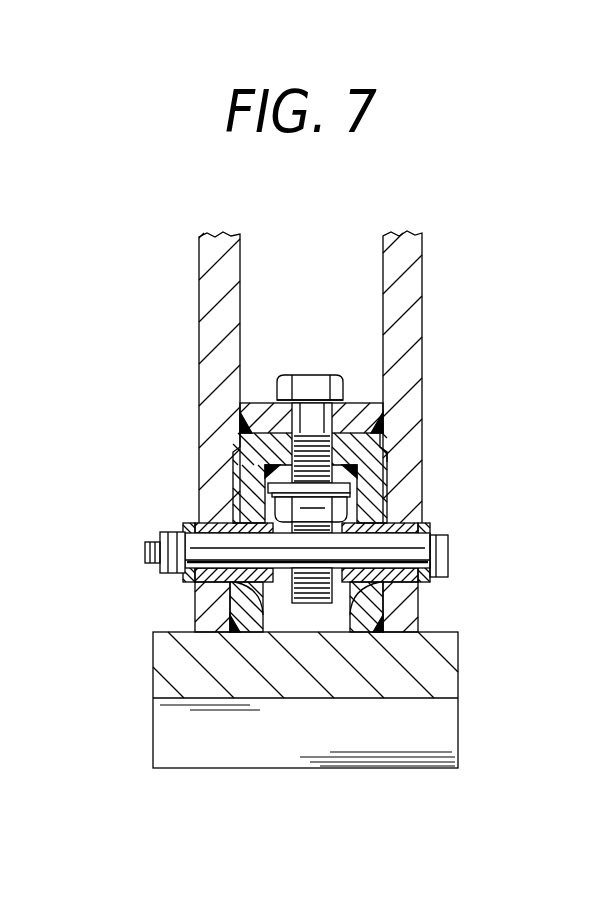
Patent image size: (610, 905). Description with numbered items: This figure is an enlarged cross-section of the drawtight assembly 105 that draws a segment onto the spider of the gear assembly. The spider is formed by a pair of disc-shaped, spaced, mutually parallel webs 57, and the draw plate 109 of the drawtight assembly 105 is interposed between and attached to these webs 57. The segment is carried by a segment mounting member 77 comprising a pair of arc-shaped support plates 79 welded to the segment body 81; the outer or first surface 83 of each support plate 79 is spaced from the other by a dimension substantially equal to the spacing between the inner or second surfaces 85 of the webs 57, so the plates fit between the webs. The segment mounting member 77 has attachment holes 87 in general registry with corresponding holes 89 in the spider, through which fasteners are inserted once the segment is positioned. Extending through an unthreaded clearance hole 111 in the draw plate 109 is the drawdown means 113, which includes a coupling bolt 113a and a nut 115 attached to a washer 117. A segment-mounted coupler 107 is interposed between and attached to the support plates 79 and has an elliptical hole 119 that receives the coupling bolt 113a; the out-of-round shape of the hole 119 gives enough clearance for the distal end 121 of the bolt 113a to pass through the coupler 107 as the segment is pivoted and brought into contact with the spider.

The web 57 is at (198, 278).
The segment mounting member 77 is at (460, 523).
The support plate 79 is at (232, 606).
The segment body 81 is at (163, 668).
The first surface 83 is at (372, 603).
The second surface 85 is at (370, 590).
The attachment hole 87 is at (222, 598).
The hole 89 is at (213, 527).
The drawtight assembly 105 is at (340, 262).
The segment-mounted coupler 107 is at (236, 450).
The draw plate 109 is at (380, 416).
The clearance hole 111 is at (280, 468).
The drawdown means 113 is at (271, 322).
The coupling bolt 113a is at (328, 374).
The nut 115 is at (277, 507).
The washer 117 is at (383, 500).
The elliptical hole 119 is at (386, 457).
The distal end 121 is at (305, 603).